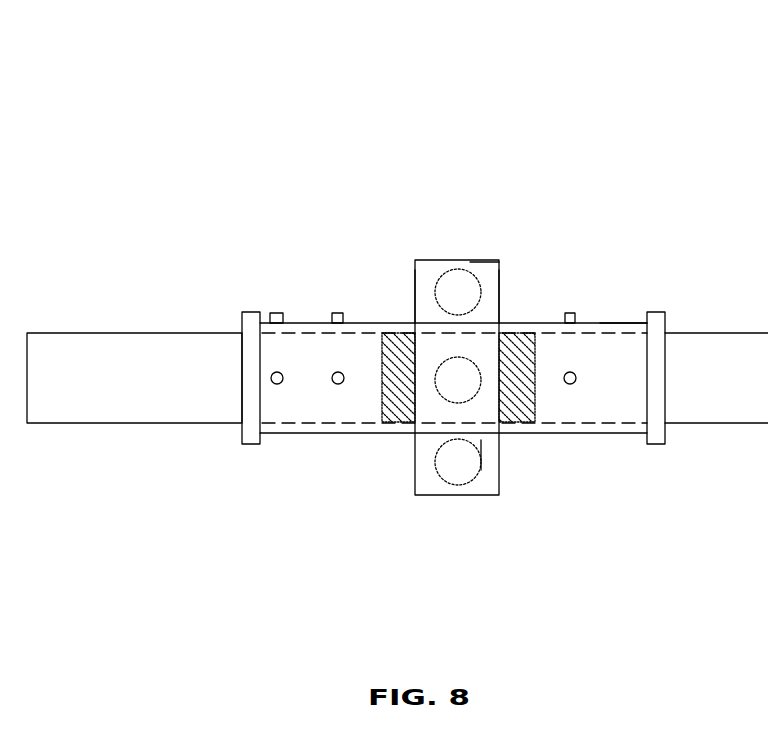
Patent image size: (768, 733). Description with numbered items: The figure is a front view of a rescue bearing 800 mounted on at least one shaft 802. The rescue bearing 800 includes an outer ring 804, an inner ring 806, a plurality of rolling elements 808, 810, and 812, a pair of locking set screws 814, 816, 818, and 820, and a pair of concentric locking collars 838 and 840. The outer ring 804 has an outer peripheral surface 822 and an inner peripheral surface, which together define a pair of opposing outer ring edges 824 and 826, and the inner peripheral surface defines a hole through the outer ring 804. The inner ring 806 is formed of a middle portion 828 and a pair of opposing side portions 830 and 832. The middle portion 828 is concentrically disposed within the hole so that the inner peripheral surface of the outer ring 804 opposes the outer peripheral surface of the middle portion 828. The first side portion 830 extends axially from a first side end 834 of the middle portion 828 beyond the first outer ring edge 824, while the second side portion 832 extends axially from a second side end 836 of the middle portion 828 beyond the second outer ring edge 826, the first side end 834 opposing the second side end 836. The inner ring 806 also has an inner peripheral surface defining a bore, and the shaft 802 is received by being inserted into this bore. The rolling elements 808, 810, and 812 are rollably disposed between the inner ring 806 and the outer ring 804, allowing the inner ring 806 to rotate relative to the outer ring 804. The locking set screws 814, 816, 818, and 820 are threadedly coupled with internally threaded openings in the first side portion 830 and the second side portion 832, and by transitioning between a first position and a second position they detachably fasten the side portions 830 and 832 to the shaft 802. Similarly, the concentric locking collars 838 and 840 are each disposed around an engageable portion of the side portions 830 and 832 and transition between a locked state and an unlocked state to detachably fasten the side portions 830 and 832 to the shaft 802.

The rescue bearing 800 is at (470, 70).
The shaft 802 is at (125, 342).
The outer ring 804 is at (442, 232).
The inner ring 806 is at (547, 290).
The rolling element 808 is at (455, 269).
The rolling element 810 is at (453, 385).
The rolling element 812 is at (458, 465).
The locking set screw 814 is at (338, 315).
The locking set screw 816 is at (338, 384).
The locking set screw 818 is at (574, 324).
The locking set screw 820 is at (574, 385).
The outer peripheral surface 822 is at (481, 268).
The first outer ring edge 824 is at (413, 297).
The second outer ring edge 826 is at (500, 300).
The middle portion 828 is at (481, 453).
The first side portion 830 is at (307, 323).
The second side portion 832 is at (628, 321).
The first side end 834 is at (413, 405).
The second side end 836 is at (498, 432).
The concentric locking collar 838 is at (237, 430).
The concentric locking collar 840 is at (652, 358).